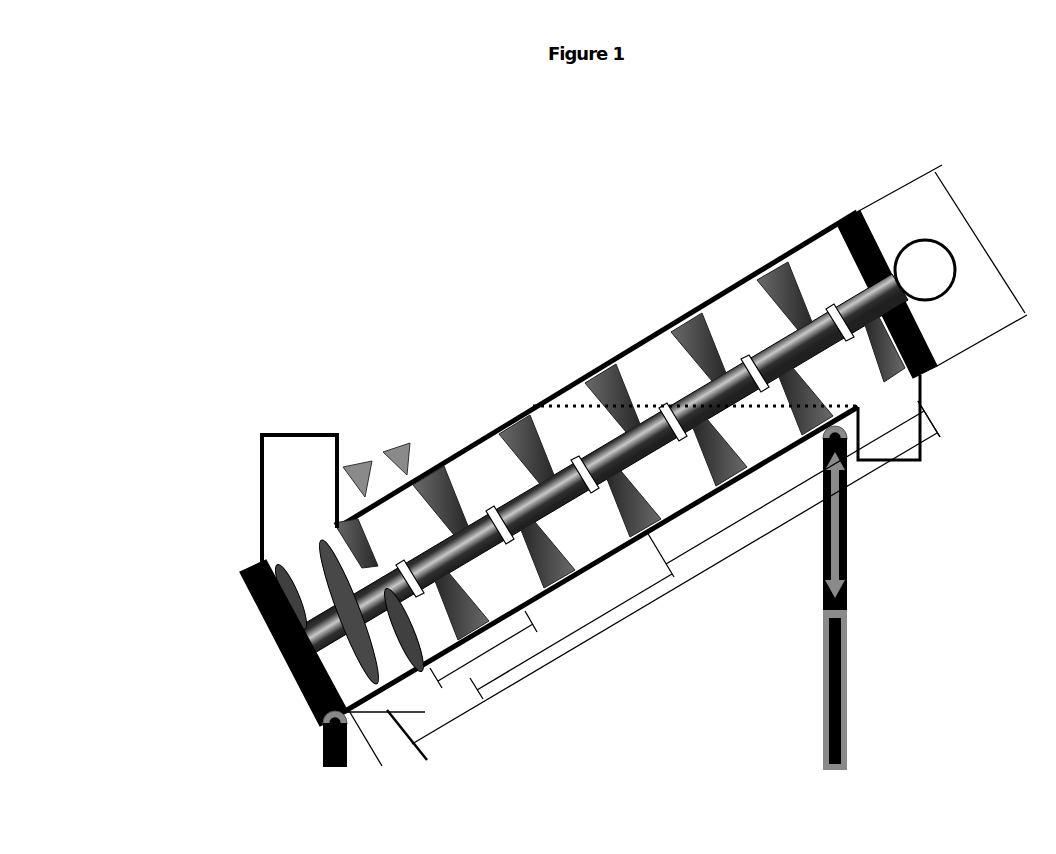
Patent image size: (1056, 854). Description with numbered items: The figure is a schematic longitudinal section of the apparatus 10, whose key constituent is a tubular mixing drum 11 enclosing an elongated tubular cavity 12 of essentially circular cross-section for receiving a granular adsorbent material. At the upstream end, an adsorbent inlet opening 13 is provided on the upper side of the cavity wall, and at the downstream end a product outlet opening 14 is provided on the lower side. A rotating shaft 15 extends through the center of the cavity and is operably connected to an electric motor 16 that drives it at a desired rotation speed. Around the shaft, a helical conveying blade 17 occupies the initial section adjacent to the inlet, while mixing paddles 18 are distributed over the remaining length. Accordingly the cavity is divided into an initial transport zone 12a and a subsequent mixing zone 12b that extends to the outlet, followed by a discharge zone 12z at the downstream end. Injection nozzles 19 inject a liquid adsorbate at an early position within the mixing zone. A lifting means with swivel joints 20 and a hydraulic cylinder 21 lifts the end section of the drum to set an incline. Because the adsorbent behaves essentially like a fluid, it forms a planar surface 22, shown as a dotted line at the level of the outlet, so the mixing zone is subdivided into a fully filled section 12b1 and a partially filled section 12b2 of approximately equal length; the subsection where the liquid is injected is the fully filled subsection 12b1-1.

The apparatus 10 is at (550, 325).
The tubular mixing drum 11 is at (737, 276).
The tubular cavity 12 is at (813, 260).
The initial transport zone 12a is at (392, 707).
The mixing zone 12b is at (645, 606).
The fully filled section 12b1 is at (545, 648).
The injection subsection of the fully filled section 12b1-1 is at (488, 660).
The partially filled section 12b2 is at (690, 550).
The discharge zone 12z is at (903, 421).
The adsorbent inlet opening 13 is at (278, 495).
The product outlet opening 14 is at (903, 437).
The rotating shaft 15 is at (262, 627).
The electric motor 16 is at (932, 258).
The helical conveying blade 17 is at (262, 580).
The mixing paddles 18 is at (298, 673).
The injection nozzles 19 is at (392, 455).
The swivel joints 20 is at (330, 727).
The hydraulic cylinder 21 is at (845, 645).
The planar surface 22 is at (657, 403).